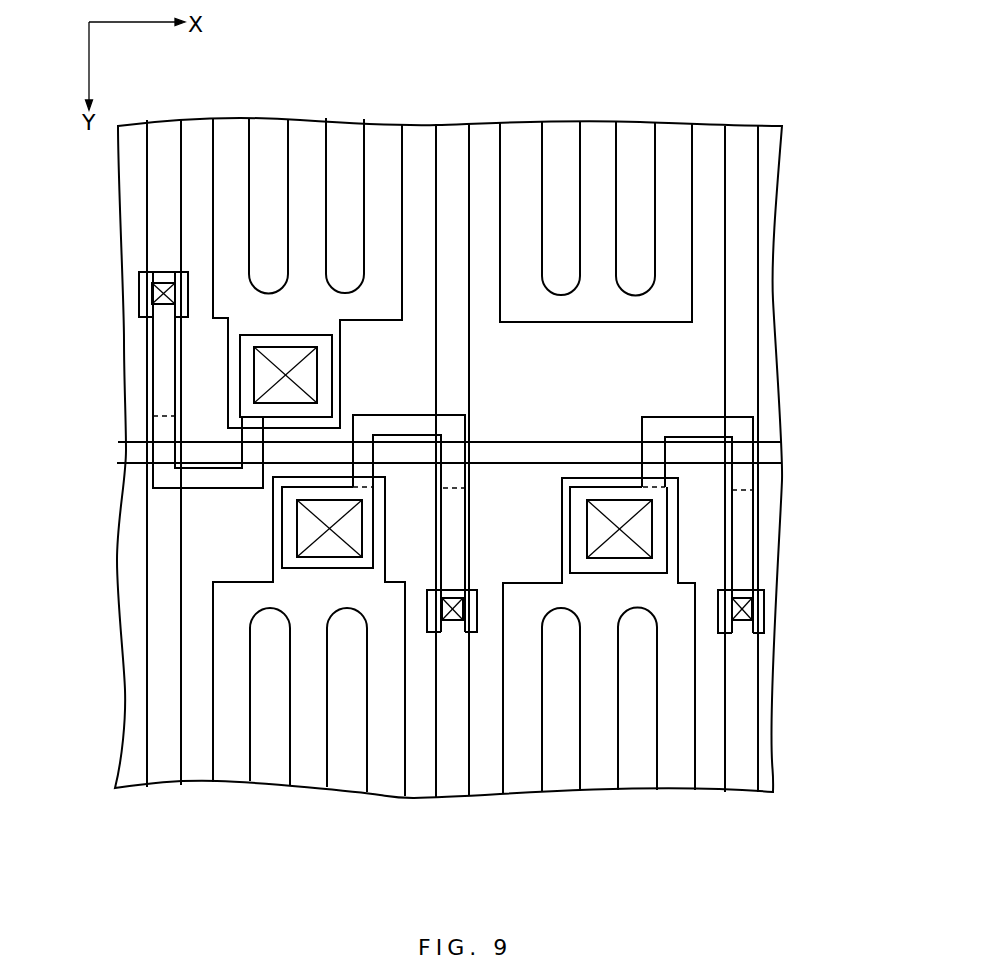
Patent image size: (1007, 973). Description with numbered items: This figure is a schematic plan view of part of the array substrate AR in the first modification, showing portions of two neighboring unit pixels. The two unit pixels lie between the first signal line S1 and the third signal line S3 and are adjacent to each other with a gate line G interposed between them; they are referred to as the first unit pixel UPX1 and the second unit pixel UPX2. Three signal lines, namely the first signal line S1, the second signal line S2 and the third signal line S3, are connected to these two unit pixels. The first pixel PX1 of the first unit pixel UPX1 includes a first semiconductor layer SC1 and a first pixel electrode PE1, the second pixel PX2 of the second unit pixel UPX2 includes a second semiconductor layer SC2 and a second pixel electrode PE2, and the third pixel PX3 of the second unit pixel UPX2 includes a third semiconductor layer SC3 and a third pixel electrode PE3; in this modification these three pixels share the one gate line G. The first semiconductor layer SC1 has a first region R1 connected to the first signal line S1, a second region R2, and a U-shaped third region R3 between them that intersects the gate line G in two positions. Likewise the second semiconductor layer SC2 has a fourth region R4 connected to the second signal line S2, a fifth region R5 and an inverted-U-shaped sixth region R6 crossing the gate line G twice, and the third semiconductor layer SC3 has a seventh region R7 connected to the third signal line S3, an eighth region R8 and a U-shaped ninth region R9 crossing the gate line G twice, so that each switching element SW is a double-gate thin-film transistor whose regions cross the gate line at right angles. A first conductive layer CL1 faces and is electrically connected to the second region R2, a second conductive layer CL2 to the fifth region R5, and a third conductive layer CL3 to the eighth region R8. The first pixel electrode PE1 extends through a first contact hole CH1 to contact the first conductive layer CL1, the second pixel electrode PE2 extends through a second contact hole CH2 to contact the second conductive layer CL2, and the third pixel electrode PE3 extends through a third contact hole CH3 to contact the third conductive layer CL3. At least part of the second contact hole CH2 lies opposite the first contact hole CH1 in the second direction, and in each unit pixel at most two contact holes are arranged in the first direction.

The array substrate AR is at (806, 84).
The gate line G is at (775, 454).
The first signal line S1 is at (170, 128).
The second signal line S2 is at (453, 136).
The third signal line S3 is at (744, 136).
The first unit pixel UPX1 is at (798, 332).
The second unit pixel UPX2 is at (798, 687).
The first pixel PX1 is at (383, 108).
The second pixel PX2 is at (384, 807).
The third pixel PX3 is at (556, 106).
The first pixel electrode PE1 is at (302, 130).
The second pixel electrode PE2 is at (309, 778).
The third pixel electrode PE3 is at (605, 130).
The first conductive layer CL1 is at (255, 333).
The first contact hole CH1 is at (301, 347).
The second conductive layer CL2 is at (362, 580).
The second contact hole CH2 is at (338, 557).
The third conductive layer CL3 is at (653, 580).
The third contact hole CH3 is at (623, 558).
The first region R1 is at (177, 333).
The second region R2 is at (242, 372).
The third region R3 is at (207, 467).
The fourth region R4 is at (441, 553).
The fifth region R5 is at (373, 520).
The sixth region R6 is at (405, 437).
The seventh region R7 is at (732, 556).
The eighth region R8 is at (667, 523).
The ninth region R9 is at (697, 438).
The first semiconductor layer SC1 is at (200, 502).
The second semiconductor layer SC2 is at (374, 404).
The third semiconductor layer SC3 is at (662, 406).
The switching element SW is at (247, 502).